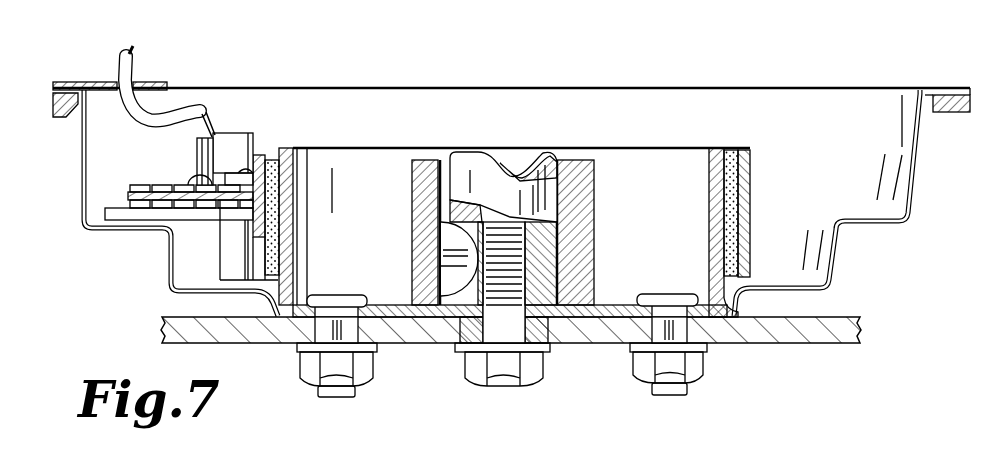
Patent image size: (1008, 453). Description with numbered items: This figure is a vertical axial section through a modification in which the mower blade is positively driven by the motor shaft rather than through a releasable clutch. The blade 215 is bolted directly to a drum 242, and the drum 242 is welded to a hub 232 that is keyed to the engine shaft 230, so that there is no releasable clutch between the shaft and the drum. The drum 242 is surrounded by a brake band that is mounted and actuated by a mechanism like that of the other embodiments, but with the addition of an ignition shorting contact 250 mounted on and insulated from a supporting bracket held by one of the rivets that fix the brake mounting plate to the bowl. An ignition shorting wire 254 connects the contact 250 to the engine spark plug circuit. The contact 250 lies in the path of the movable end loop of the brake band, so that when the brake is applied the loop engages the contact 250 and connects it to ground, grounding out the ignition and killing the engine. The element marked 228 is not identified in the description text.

The blade 215 is at (780, 333).
The printed circuit board 228 is at (173, 186).
The engine shaft 230 is at (523, 190).
The hub 232 is at (592, 203).
The drum 242 is at (706, 184).
The ignition shorting contact 250 is at (232, 144).
The ignition shorting wire 254 is at (140, 124).